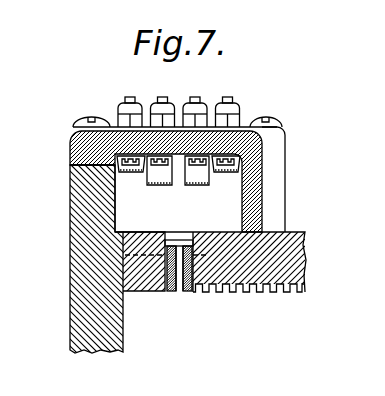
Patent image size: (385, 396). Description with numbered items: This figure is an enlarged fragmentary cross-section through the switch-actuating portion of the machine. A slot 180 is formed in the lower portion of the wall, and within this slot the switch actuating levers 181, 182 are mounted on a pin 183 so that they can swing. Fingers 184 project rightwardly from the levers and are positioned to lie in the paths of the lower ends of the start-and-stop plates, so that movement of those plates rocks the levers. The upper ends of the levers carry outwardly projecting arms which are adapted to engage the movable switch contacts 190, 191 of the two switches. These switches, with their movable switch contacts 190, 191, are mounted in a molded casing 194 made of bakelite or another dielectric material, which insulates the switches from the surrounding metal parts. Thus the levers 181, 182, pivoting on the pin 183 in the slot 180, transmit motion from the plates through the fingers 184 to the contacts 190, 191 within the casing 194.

The slot 180 is at (170, 292).
The switch actuating lever 181 is at (164, 242).
The switch actuating lever 182 is at (192, 243).
The pin 183 is at (125, 268).
The fingers 184 is at (172, 292).
The movable switch contact 190 is at (150, 167).
The movable switch contact 191 is at (193, 173).
The molded casing 194 is at (268, 188).